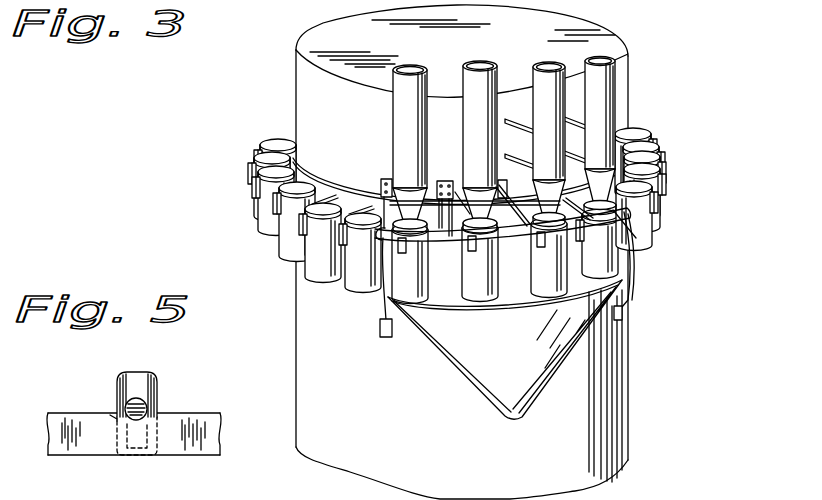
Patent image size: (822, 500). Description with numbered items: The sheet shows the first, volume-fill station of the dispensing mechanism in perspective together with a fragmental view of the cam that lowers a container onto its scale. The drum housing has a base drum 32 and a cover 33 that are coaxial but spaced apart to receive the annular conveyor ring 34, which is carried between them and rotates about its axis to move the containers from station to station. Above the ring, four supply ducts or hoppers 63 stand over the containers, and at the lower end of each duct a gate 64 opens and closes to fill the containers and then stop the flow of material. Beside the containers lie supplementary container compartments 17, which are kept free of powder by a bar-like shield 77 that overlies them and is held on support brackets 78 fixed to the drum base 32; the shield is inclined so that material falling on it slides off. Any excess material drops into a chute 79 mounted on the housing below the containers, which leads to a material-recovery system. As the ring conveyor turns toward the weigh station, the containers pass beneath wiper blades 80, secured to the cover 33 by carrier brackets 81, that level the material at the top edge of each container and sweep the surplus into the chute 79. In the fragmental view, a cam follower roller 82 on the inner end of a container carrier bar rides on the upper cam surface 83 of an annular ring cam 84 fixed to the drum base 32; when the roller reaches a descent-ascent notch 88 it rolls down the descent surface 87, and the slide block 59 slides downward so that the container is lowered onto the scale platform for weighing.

In FIG. 3, the supplementary container compartments 17 is at (457, 216).
In FIG. 3, the base drum 32 is at (300, 348).
In FIG. 3, the cover 33 is at (307, 92).
In FIG. 3, the conveyor ring 34 is at (321, 188).
In FIG. 5, the slide block 59 is at (134, 388).
In FIG. 3, the supply duct 63 is at (592, 70).
In FIG. 3, the gate 64 is at (403, 190).
In FIG. 3, the shield 77 is at (591, 236).
In FIG. 3, the support brackets 78 is at (378, 294).
In FIG. 3, the chute 79 is at (490, 372).
In FIG. 3, the wiper blades 80 is at (448, 232).
In FIG. 3, the carrier brackets 81 is at (443, 155).
In FIG. 5, the cam follower roller 82 is at (126, 404).
In FIG. 5, the upper cam surface 83 is at (60, 412).
In FIG. 5, the annular ring cam 84 is at (65, 445).
In FIG. 5, the descent surface 87 is at (112, 418).
In FIG. 5, the descent-ascent notches 88 is at (129, 431).